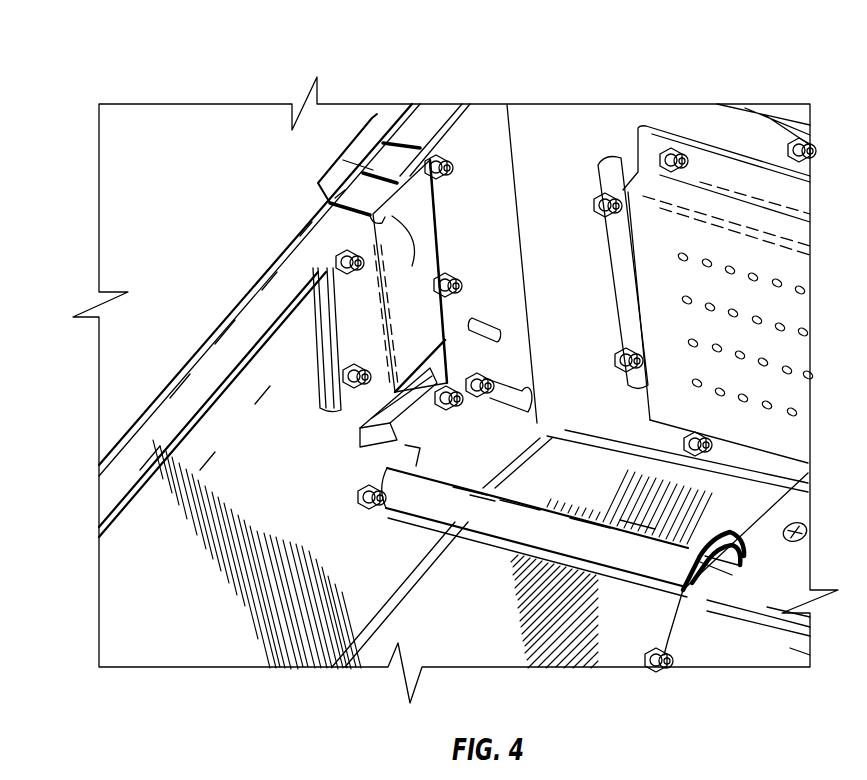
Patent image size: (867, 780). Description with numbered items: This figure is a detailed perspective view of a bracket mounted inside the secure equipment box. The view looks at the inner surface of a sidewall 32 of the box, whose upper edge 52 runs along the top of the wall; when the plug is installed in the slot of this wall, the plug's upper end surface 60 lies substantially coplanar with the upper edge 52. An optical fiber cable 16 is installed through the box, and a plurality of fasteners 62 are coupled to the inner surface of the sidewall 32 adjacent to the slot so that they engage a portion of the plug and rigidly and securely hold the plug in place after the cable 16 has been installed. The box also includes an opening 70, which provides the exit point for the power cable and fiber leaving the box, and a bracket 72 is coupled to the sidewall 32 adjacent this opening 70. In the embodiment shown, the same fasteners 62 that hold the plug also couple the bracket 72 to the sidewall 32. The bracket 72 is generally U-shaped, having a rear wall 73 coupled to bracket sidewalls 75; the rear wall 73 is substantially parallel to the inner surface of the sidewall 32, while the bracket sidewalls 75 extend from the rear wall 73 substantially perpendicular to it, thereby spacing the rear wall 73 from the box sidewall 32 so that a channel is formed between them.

The optical fiber cable 16 is at (598, 550).
The sidewall 32 is at (137, 600).
The upper edge 52 is at (303, 253).
The upper end surface 60 is at (367, 185).
The fasteners 62 is at (440, 162).
The opening 70 is at (391, 158).
The bracket 72 is at (437, 217).
The rear wall 73 is at (345, 195).
The bracket sidewalls 75 is at (342, 355).